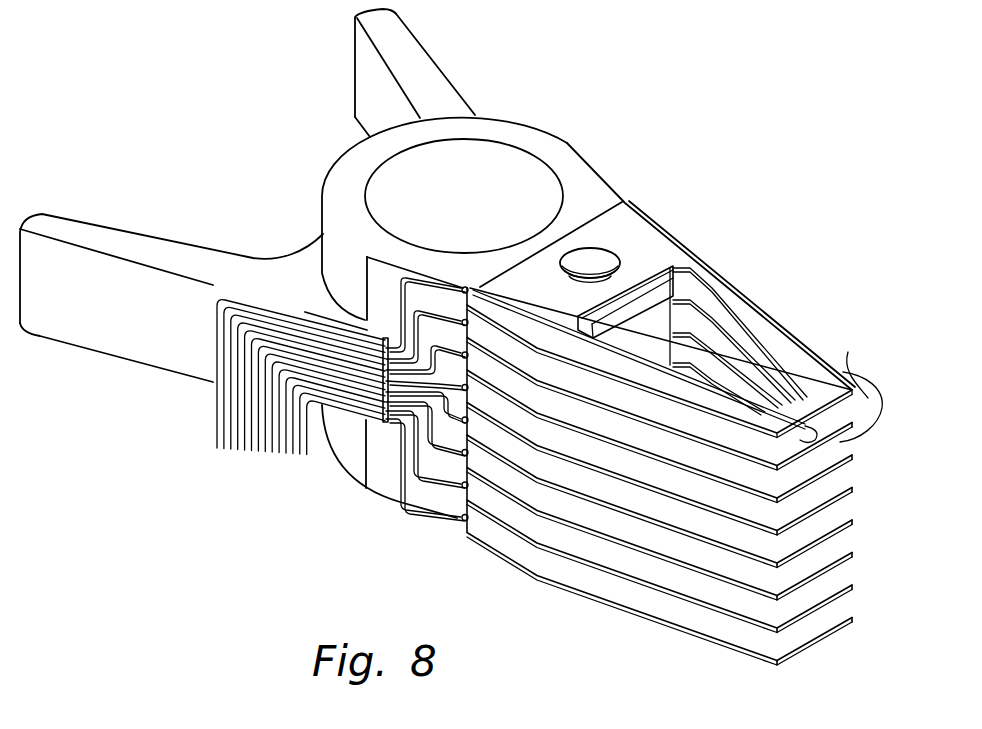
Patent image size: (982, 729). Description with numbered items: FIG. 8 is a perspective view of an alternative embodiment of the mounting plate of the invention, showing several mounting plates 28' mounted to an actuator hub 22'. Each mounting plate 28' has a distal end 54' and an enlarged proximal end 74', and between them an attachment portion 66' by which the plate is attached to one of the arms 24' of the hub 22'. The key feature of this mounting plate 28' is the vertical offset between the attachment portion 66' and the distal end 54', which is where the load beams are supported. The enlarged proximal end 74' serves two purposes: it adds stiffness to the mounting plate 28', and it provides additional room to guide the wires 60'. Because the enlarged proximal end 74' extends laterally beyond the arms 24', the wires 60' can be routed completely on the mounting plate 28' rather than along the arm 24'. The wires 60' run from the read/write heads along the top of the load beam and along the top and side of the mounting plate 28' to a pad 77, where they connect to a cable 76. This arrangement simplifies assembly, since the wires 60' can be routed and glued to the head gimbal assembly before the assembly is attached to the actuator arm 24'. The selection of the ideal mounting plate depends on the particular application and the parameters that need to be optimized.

The hub 22' is at (437, 263).
The attachment portion 66' is at (653, 227).
The proximal end 74' is at (683, 267).
The arms 24' is at (740, 329).
The wires 60' is at (641, 329).
The distal end 54' is at (666, 363).
The mounting plate 28' is at (864, 386).
The cable 76 is at (213, 397).
The pad 77 is at (460, 490).